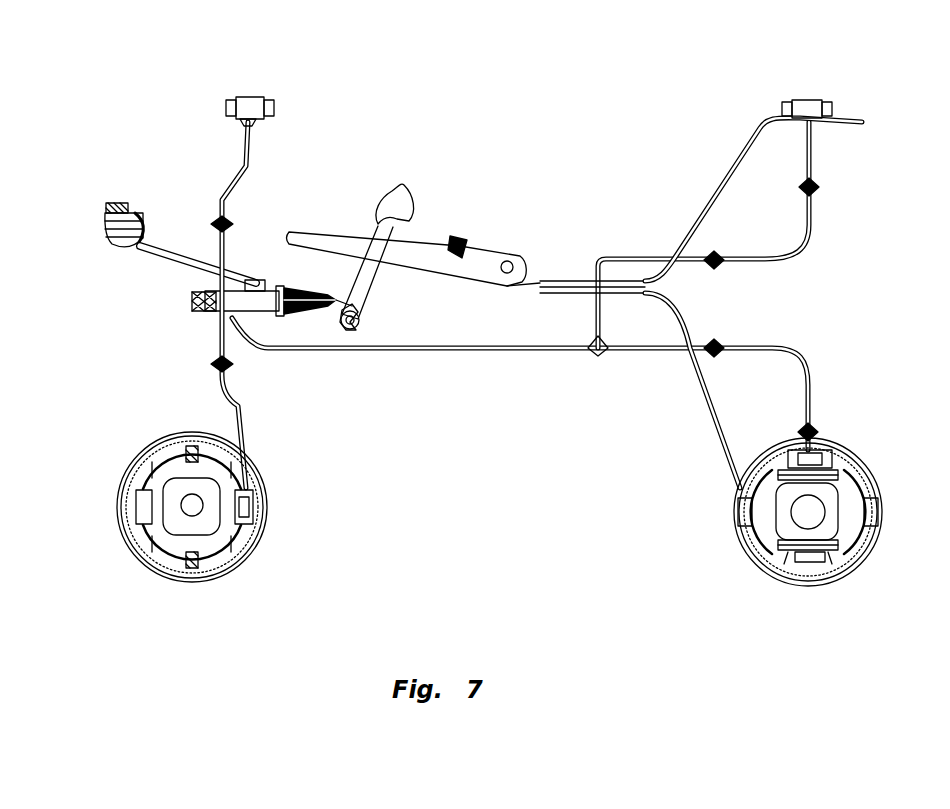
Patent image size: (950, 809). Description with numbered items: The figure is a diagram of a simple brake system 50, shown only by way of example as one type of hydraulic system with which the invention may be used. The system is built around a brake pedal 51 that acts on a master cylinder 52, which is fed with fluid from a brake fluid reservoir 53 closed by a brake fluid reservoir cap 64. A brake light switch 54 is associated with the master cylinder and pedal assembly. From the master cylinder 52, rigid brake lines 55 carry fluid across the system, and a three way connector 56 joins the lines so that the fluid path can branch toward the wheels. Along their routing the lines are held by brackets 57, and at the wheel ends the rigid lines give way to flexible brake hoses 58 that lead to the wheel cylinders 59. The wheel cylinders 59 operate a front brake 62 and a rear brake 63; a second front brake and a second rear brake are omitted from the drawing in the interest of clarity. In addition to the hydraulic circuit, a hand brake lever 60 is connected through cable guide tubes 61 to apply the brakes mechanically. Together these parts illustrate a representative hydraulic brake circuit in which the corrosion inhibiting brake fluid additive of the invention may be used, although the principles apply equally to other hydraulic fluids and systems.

The simple brake system 50 is at (578, 76).
The brake pedal 51 is at (412, 215).
The master cylinder 52 is at (257, 289).
The brake fluid reservoir 53 is at (143, 222).
The brake light switch 54 is at (197, 311).
The rigid brake lines 55 is at (434, 350).
The three way connector 56 is at (597, 356).
The brackets 57 is at (231, 222).
The flexible brake hoses 58 is at (244, 164).
The wheel cylinders 59 is at (248, 98).
The hand brake lever 60 is at (326, 235).
The cable guide tubes 61 is at (700, 221).
The front brake 62 is at (268, 504).
The rear brake 63 is at (736, 510).
The brake fluid reservoir cap 64 is at (117, 202).